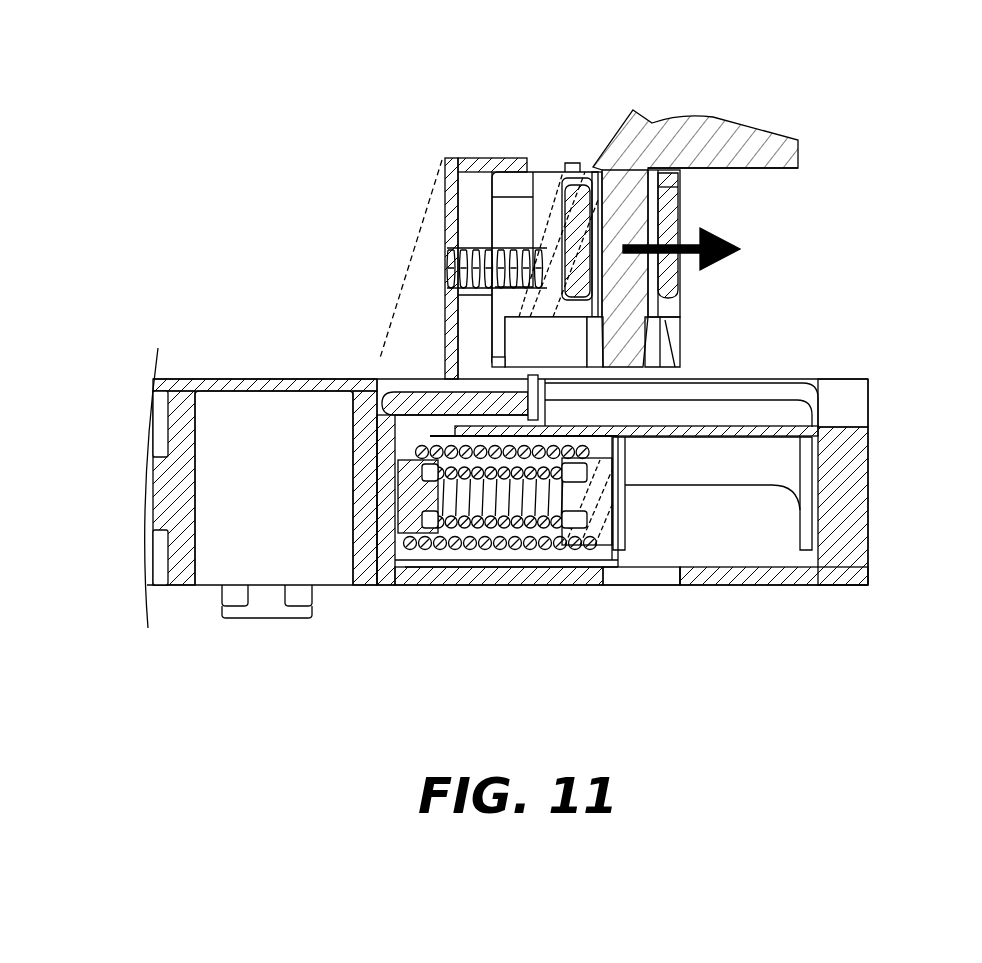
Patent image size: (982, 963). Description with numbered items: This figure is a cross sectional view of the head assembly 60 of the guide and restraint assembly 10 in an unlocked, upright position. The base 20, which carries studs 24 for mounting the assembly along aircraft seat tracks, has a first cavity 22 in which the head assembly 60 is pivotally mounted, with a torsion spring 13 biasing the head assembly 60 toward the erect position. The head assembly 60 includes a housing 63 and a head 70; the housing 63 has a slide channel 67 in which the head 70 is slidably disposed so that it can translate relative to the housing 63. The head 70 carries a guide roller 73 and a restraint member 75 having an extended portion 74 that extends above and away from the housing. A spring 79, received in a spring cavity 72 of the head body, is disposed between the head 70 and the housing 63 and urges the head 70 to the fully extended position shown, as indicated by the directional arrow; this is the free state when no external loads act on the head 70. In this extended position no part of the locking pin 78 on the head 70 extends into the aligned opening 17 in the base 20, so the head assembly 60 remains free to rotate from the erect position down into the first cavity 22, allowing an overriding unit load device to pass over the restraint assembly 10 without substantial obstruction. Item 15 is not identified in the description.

The guide and restraint assembly 10 is at (283, 103).
The torsion spring 13 is at (487, 547).
The plate 15 is at (412, 460).
The aligned opening 17 is at (362, 407).
The base 20 is at (740, 585).
The first cavity 22 is at (696, 543).
The studs 24 is at (257, 606).
The head assembly 60 is at (520, 105).
The housing 63 is at (417, 268).
The slide channel 67 is at (717, 408).
The head 70 is at (790, 240).
The spring cavity 72 is at (500, 233).
The guide roller 73 is at (675, 215).
The extended portion 74 is at (743, 143).
The restraint member 75 is at (655, 122).
The locking pin 78 is at (437, 402).
The spring 79 is at (477, 247).